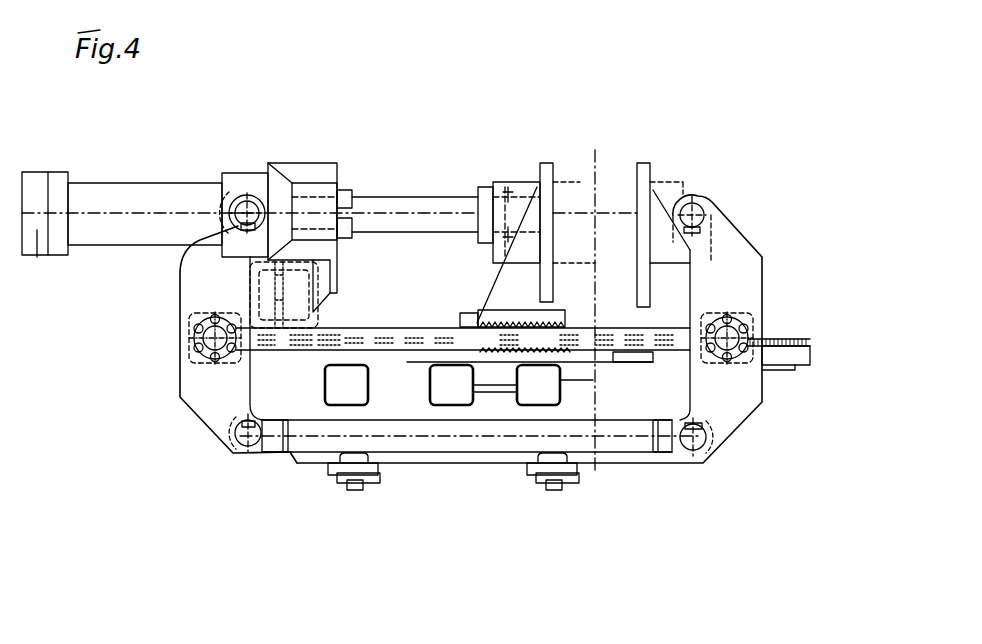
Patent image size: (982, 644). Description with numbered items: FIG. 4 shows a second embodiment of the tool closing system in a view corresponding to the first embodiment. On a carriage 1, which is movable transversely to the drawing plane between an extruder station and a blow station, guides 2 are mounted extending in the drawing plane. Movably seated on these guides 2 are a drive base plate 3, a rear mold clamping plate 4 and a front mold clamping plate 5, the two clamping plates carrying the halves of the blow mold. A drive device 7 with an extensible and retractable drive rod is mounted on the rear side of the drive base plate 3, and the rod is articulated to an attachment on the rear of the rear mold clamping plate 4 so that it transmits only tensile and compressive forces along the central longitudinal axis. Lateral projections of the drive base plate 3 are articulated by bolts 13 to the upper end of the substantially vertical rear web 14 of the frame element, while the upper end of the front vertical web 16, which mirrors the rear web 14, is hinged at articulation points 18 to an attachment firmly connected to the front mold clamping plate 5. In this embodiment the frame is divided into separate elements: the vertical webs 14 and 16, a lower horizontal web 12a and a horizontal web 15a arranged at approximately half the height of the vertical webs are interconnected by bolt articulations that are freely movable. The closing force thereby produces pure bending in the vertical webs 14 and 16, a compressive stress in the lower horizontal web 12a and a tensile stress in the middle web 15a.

The carriage 1 is at (775, 377).
The guides 2 is at (790, 342).
The drive base plate 3 is at (315, 172).
The rear mold clamping plate 4 is at (545, 162).
The front mold clamping plate 5 is at (651, 162).
The drive device 7 is at (153, 205).
The lower horizontal web 12a is at (495, 442).
The bolts 13 is at (244, 192).
The rear vertical web 14 is at (220, 390).
The horizontal web 15a is at (603, 338).
The front vertical web 16 is at (727, 388).
The articulation points 18 is at (708, 199).